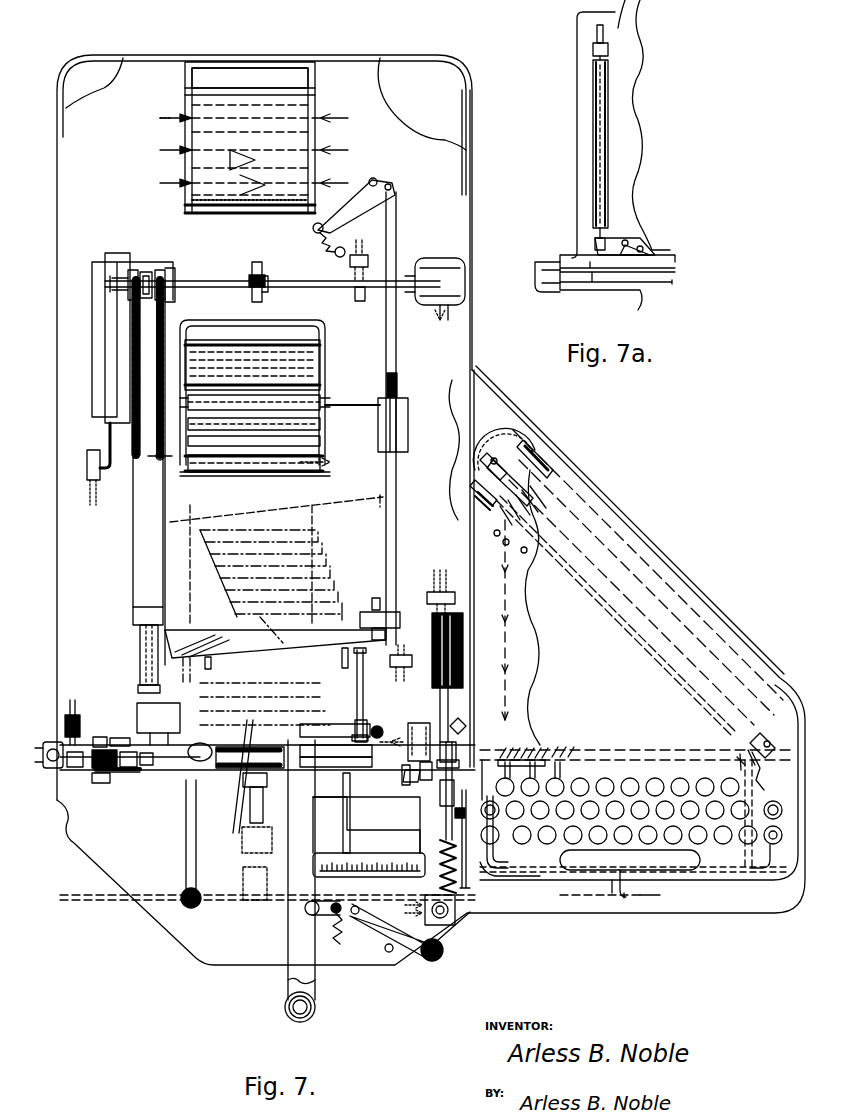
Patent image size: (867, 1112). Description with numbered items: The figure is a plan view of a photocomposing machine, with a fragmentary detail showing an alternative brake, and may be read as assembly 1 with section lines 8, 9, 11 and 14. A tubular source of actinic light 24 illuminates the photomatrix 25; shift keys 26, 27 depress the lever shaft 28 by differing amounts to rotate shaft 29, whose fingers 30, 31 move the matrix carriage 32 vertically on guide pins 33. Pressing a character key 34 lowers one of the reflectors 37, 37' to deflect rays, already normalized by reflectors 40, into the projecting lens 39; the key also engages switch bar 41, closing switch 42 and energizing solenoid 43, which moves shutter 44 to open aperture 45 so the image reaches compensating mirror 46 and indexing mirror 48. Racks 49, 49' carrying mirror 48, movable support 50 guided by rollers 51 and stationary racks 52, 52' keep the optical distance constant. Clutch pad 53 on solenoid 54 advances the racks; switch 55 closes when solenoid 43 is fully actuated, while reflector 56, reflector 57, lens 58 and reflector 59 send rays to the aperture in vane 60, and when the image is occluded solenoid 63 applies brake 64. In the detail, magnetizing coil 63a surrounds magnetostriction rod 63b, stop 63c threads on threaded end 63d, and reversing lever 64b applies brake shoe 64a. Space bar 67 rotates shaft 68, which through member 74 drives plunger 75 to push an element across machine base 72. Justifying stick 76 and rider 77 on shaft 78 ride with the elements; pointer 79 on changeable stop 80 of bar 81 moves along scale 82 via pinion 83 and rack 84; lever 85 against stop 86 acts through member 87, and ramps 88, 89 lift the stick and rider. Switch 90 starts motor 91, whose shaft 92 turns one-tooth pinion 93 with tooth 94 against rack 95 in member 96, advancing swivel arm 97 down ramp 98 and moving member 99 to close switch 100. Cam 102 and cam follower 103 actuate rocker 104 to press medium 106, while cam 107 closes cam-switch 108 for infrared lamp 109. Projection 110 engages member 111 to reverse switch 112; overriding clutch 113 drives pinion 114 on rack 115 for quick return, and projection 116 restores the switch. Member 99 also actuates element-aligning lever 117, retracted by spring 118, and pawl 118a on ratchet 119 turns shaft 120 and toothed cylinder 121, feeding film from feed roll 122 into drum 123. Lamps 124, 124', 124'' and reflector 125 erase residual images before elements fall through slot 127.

In FIG. 7, the paper chute 1 is at (586, 490).
In FIG. 7, the section line 8 is at (235, 1040).
In FIG. 7, the section line 9 is at (560, 413).
In FIG. 7, the section line 11 is at (478, 760).
In FIG. 7, the section line 14 is at (372, 470).
In FIG. 7, the tubular source of actinic light 24 is at (548, 452).
In FIG. 7, the photomatrix 25 is at (534, 502).
In FIG. 7, the shift key 26 is at (778, 804).
In FIG. 7, the shift key 27 is at (778, 829).
In FIG. 7, the lever shaft 28 is at (504, 864).
In FIG. 7, the shaft 29 is at (476, 500).
In FIG. 7, the finger 30 is at (475, 480).
In FIG. 7, the finger 31 is at (762, 760).
In FIG. 7, the matrix carriage 32 is at (480, 462).
In FIG. 7, the guide pins 33 is at (500, 426).
In FIG. 7, the character key 34 is at (500, 778).
In FIG. 7, the reflector mirror 37 is at (513, 750).
In FIG. 7, the reflector mirror 37' is at (544, 746).
In FIG. 7, the projecting lens 39 is at (404, 774).
In FIG. 7, the reflector 40 is at (522, 548).
In FIG. 7, the switch bar 41 is at (467, 850).
In FIG. 7, the switch 42 is at (465, 818).
In FIG. 7, the solenoid 43 is at (432, 680).
In FIG. 7, the shutter 44 is at (445, 818).
In FIG. 7, the aperture 45 is at (426, 770).
In FIG. 7, the distance compensating mirror 46 is at (243, 782).
In FIG. 7, the indexing mirror 48 is at (232, 748).
In FIG. 7, the movable racks 49 is at (122, 786).
In FIG. 7, the rack 49' is at (126, 794).
In FIG. 7, the movable support 50 is at (135, 768).
In FIG. 7, the rollers 51 is at (150, 767).
In FIG. 7, the stationary racks 52 is at (320, 745).
In FIG. 7, the shaft 52' is at (316, 743).
In FIG. 7, the clutch pad 53 is at (112, 768).
In FIG. 7, the solenoid 54 is at (100, 737).
In FIG. 7, the switch 55 is at (450, 592).
In FIG. 7, the reflector 56 is at (456, 768).
In FIG. 7, the reflector 57 is at (458, 716).
In FIG. 7, the lens 58 is at (410, 730).
In FIG. 7, the reflector 59 is at (198, 744).
In FIG. 7, the vane 60 is at (138, 733).
In FIG. 7, the solenoid 63 is at (80, 714).
In FIG. 7, the brake 64 is at (55, 742).
In FIG. 7, the space bar 67 is at (655, 875).
In FIG. 7, the shaft 68 is at (380, 893).
In FIG. 7, the machine base 72 is at (118, 622).
In FIG. 7, the member 74 is at (236, 822).
In FIG. 7, the plunger 75 is at (316, 980).
In FIG. 7, the justifying stick 76 is at (185, 858).
In FIG. 7, the rider 77 is at (332, 735).
In FIG. 7, the shaft 78 is at (365, 692).
In FIG. 7, the pointer 79 is at (410, 814).
In FIG. 7, the changeable stop 80 is at (406, 786).
In FIG. 7, the bar 81 is at (350, 776).
In FIG. 7, the scale 82 is at (362, 853).
In FIG. 7, the pinion 83 is at (80, 767).
In FIG. 7, the rack 84 is at (101, 783).
In FIG. 7, the lever 85 is at (412, 955).
In FIG. 7, the stop 86 is at (393, 952).
In FIG. 7, the member 87 is at (346, 906).
In FIG. 7, the ramp 88 is at (212, 663).
In FIG. 7, the ramp 89 is at (341, 660).
In FIG. 7, the switch 90 is at (455, 908).
In FIG. 7, the motor 91 is at (466, 268).
In FIG. 7, the shaft 92 is at (342, 296).
In FIG. 7, the one-tooth pinion 93 is at (162, 270).
In FIG. 7, the tooth 94 is at (170, 270).
In FIG. 7, the rack 95 is at (156, 460).
In FIG. 7, the member 96 is at (136, 514).
In FIG. 7, the swivel arm 97 is at (234, 636).
In FIG. 7, the ramp 98 is at (384, 626).
In FIG. 7, the member 99 is at (398, 537).
In FIG. 7, the switch 100 is at (408, 652).
In FIG. 7, the cam 102 is at (258, 266).
In FIG. 7, the cam follower 103 is at (265, 280).
In FIG. 7, the rocker 104 is at (324, 326).
In FIG. 7, the sensitized medium 106 is at (322, 442).
In FIG. 7, the cam 107 is at (360, 301).
In FIG. 7, the cam-switch 108 is at (352, 264).
In FIG. 7, the infrared source lamp 109 is at (332, 462).
In FIG. 7, the projection 110 is at (140, 607).
In FIG. 7, the member 111 is at (105, 425).
In FIG. 7, the switch 112 is at (100, 478).
In FIG. 7, the overriding clutch 113 is at (147, 272).
In FIG. 7, the pinion 114 is at (128, 253).
In FIG. 7, the rack 115 is at (132, 318).
In FIG. 7, the projection 116 is at (133, 270).
In FIG. 7, the element-aligning lever 117 is at (345, 192).
In FIG. 7, the spring 118 is at (343, 245).
In FIG. 7, the pawl 118a is at (398, 386).
In FIG. 7, the ratchet 119 is at (405, 414).
In FIG. 7, the shaft 120 is at (332, 402).
In FIG. 7, the toothed cylinder 121 is at (322, 422).
In FIG. 7, the feed roll 122 is at (322, 488).
In FIG. 7, the drum 123 is at (320, 356).
In FIG. 7, the infrared source lamp 124 is at (234, 107).
In FIG. 7, the infrared source lamp 124' is at (234, 141).
In FIG. 7, the infrared source lamp 124'' is at (233, 172).
In FIG. 7, the reflector 125 is at (316, 106).
In FIG. 7, the slot 127 is at (310, 72).
In FIG. 7A, the magnetizing coil 63a is at (610, 143).
In FIG. 7A, the magnetostriction rod 63b is at (606, 232).
In FIG. 7A, the stop 63c is at (612, 50).
In FIG. 7A, the threaded end 63d is at (604, 30).
In FIG. 7A, the brake shoe 64a is at (655, 253).
In FIG. 7A, the reversing lever 64b is at (640, 240).